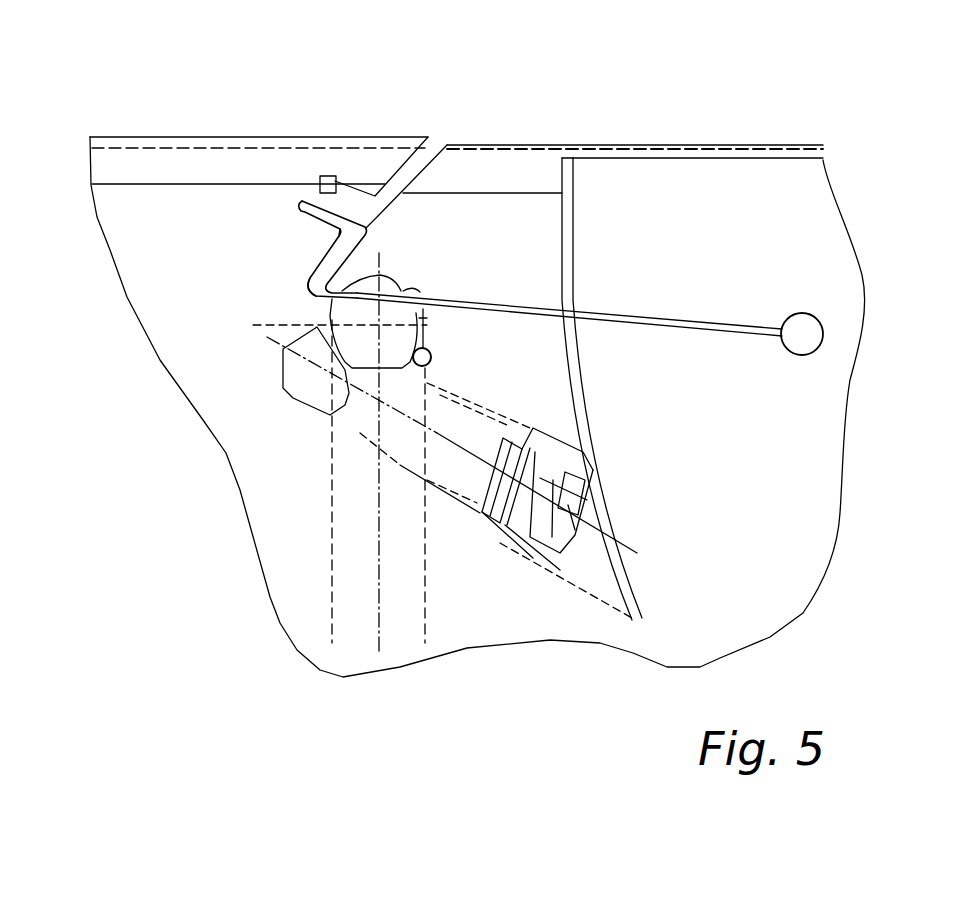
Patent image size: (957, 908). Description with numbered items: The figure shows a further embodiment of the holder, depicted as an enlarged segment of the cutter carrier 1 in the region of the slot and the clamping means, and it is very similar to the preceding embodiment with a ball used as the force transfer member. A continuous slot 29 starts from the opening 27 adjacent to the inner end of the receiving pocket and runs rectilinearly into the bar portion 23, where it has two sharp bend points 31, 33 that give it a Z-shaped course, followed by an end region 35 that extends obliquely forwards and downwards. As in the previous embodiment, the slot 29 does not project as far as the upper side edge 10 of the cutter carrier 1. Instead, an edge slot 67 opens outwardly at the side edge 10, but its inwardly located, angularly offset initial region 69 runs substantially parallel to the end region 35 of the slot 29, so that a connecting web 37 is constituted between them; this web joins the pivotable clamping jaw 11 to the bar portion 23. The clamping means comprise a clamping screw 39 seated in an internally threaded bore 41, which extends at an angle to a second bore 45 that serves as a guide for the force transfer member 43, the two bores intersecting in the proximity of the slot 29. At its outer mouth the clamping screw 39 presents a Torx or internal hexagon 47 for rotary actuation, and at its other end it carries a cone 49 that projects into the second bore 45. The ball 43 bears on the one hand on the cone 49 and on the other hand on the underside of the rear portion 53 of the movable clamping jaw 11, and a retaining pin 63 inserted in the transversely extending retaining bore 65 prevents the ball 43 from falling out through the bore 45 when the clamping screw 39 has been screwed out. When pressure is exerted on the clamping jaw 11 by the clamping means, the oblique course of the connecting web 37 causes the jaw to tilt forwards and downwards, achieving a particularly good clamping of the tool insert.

The cutter carrier 1 is at (108, 278).
The upper side edge 10 is at (163, 133).
The pivotable clamping jaw 11 is at (707, 227).
The bar portion 23 is at (227, 222).
The opening 27 is at (798, 312).
The slot 29 is at (493, 298).
The sharp bend point 31 is at (309, 281).
The sharp bend point 33 is at (366, 232).
The end region 35 is at (300, 201).
The connecting web 37 is at (328, 198).
The clamping screw 39 is at (440, 468).
The bore 41 is at (572, 540).
The force transfer member 43 is at (332, 322).
The second bore 45 is at (337, 567).
The internal hexagon 47 is at (575, 563).
The cone 49 is at (332, 458).
The rear portion 53 is at (453, 250).
The retaining pin 63 is at (433, 352).
The retaining bore 65 is at (430, 347).
The edge slot 67 is at (427, 158).
The initial region 69 is at (353, 197).